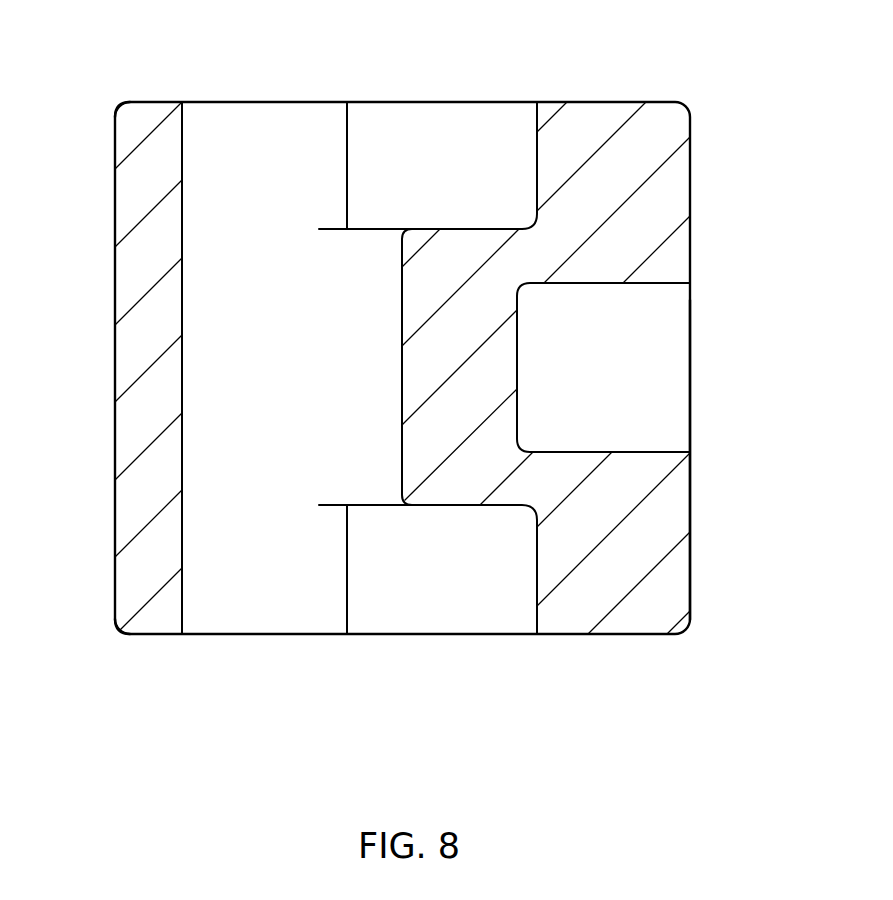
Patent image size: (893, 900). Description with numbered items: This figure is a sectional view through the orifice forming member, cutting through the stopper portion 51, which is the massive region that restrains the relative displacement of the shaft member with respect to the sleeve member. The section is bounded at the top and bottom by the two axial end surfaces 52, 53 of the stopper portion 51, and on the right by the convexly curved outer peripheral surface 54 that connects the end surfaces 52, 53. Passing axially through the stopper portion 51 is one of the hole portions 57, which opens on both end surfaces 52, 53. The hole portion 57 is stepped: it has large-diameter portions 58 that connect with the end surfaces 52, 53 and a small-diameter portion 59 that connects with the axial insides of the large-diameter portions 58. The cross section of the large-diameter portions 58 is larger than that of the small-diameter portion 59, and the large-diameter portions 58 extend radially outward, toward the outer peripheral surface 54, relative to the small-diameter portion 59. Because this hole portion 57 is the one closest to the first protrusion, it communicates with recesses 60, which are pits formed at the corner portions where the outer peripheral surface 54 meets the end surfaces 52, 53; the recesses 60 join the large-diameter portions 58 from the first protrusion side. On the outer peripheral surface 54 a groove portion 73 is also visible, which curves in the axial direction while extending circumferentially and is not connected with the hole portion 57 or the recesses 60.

The stopper portion 51 is at (137, 275).
The end surface 52 is at (147, 100).
The end surface 53 is at (160, 635).
The outer peripheral surface 54 is at (690, 552).
The hole portion 57 is at (182, 592).
The large-diameter portion 58 is at (537, 140).
The small-diameter portion 59 is at (402, 454).
The recess 60 is at (438, 135).
The groove portion 73 is at (660, 452).